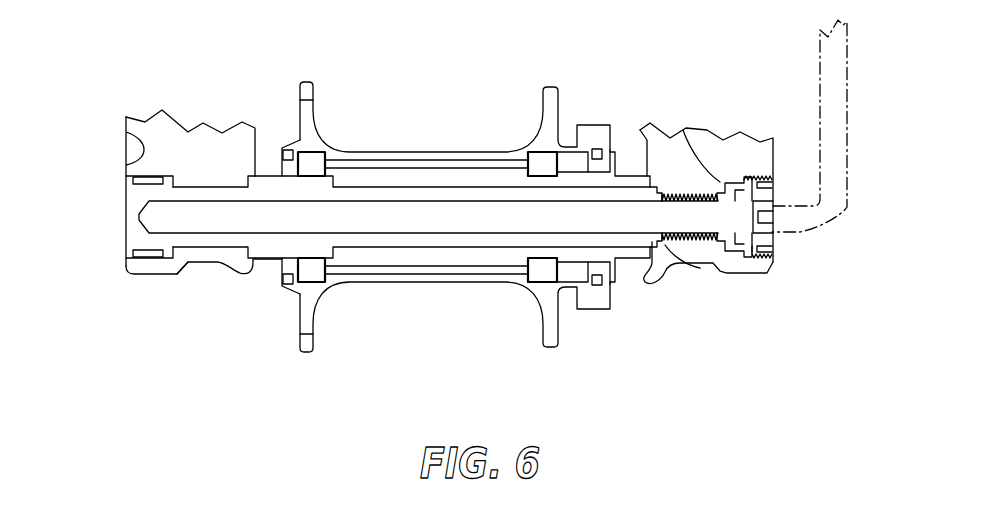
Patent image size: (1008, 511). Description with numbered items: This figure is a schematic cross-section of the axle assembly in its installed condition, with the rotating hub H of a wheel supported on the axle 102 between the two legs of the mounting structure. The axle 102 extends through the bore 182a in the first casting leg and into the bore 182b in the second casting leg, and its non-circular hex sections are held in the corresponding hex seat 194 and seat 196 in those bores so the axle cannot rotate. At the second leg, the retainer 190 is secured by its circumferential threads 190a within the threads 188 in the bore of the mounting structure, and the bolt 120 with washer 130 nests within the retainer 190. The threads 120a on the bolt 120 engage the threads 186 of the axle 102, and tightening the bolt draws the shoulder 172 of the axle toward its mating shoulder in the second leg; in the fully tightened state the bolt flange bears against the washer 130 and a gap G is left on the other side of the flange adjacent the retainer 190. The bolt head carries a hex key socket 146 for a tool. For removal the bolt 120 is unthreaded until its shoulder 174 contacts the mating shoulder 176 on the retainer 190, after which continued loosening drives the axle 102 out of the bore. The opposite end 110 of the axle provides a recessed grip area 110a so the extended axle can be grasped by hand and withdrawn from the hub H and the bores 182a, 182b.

The hub H is at (350, 131).
The axle 102 is at (213, 192).
The end of the axle 110 is at (125, 218).
The grip area 110a is at (147, 252).
The bolt 120 is at (655, 228).
The threads on the bolt 120a is at (655, 217).
The washer 130 is at (733, 252).
The hex key socket 146 is at (768, 210).
The shoulder of the axle 172 is at (178, 184).
The shoulder on the bolt 174 is at (698, 200).
The mating shoulder on the retainer 176 is at (733, 182).
The bore in casting leg 182a is at (157, 124).
The bore in casting leg 182b is at (650, 143).
The threads of the axle 186 is at (692, 245).
The threads in a bore of mounting structure 188 is at (768, 278).
The retainer 190 is at (777, 250).
The circumferential threads 190a is at (773, 170).
The seat 194 is at (192, 244).
The seat 196 is at (688, 148).
The gap G is at (751, 254).